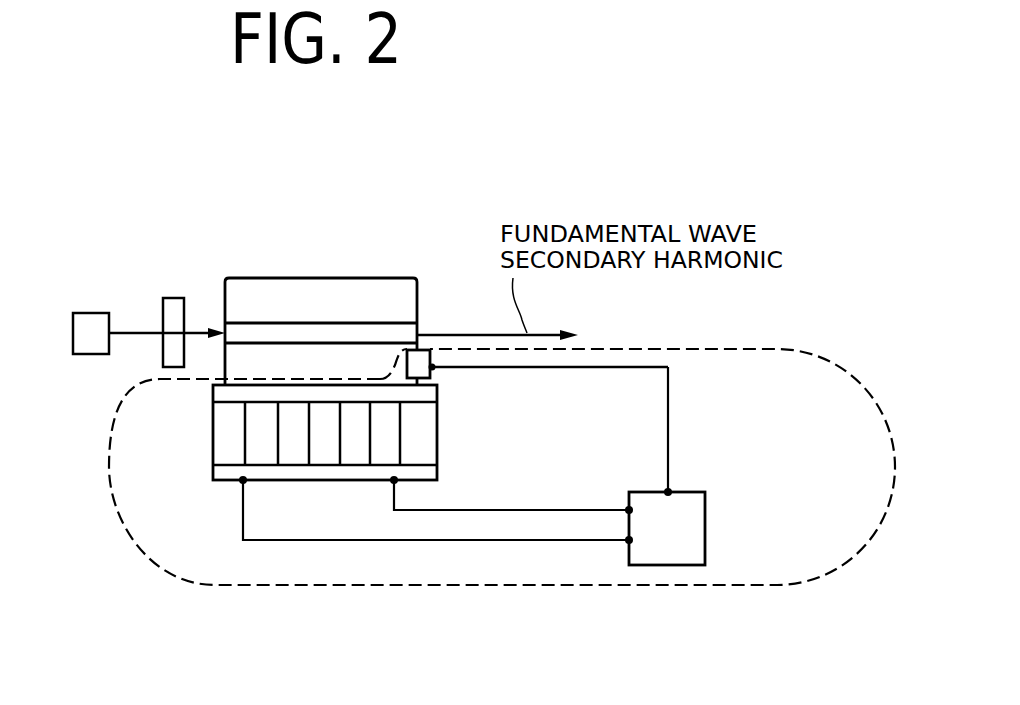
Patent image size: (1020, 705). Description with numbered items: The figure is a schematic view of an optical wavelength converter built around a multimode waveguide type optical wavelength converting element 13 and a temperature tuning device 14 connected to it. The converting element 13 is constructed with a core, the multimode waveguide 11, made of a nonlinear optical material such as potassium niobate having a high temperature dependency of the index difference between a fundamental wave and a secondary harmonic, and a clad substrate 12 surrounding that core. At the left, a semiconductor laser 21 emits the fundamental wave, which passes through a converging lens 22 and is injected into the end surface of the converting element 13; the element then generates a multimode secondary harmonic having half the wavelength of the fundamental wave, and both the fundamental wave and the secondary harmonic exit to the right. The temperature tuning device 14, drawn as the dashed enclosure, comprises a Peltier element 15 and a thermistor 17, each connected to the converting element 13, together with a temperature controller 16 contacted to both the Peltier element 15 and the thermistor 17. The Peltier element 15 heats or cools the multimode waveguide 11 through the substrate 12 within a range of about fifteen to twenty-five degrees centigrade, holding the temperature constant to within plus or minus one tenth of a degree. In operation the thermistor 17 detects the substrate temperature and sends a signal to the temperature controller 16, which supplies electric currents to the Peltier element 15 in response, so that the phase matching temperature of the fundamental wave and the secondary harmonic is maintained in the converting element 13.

The multimode waveguide 11 is at (322, 333).
The clad substrate 12 is at (400, 290).
The multimode waveguide type optical wavelength converting element 13 is at (437, 200).
The temperature tuning device 14 is at (300, 585).
The Peltier element 15 is at (217, 433).
The temperature controller 16 is at (706, 513).
The thermistor 17 is at (430, 378).
The semiconductor laser 21 is at (90, 313).
The converging lens 22 is at (173, 298).